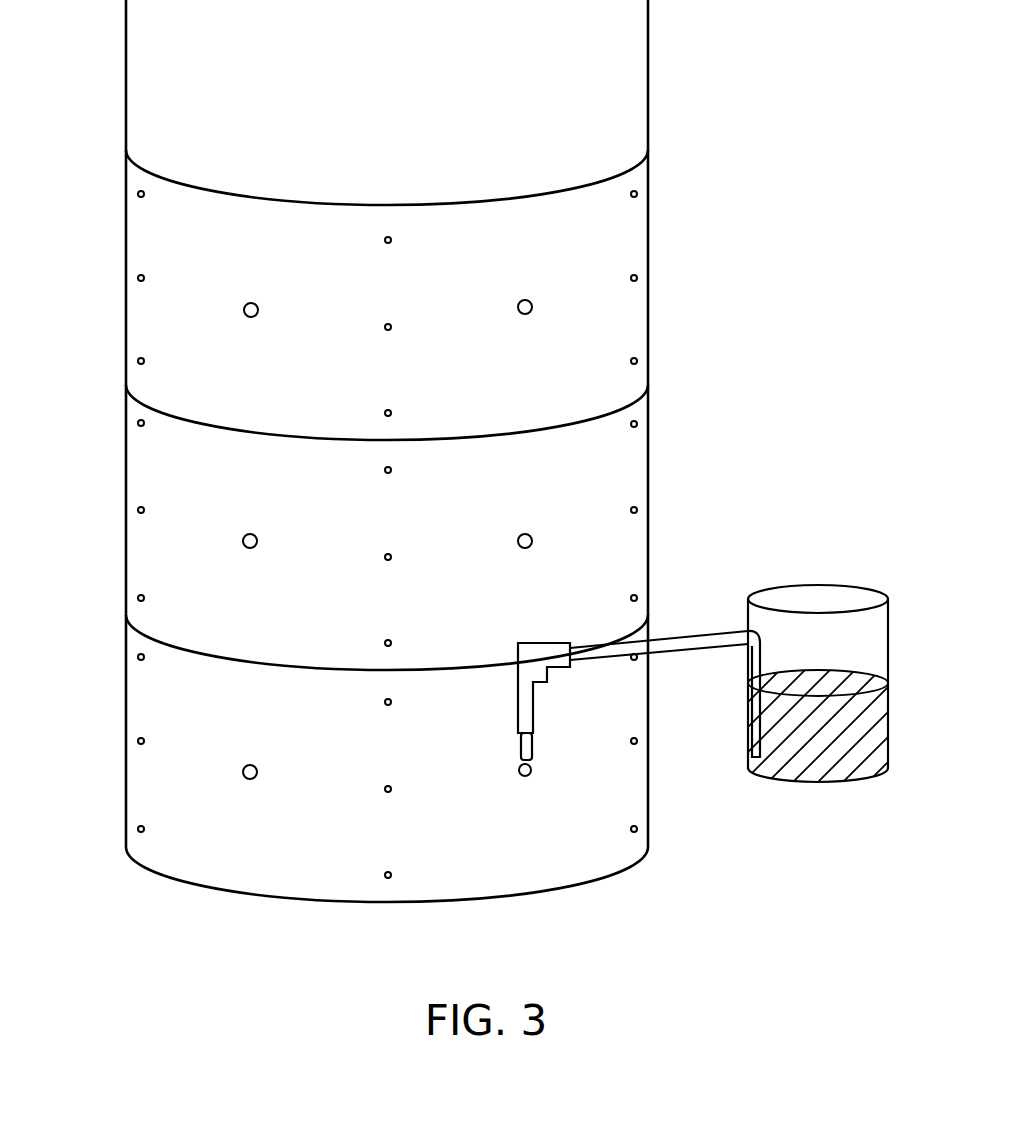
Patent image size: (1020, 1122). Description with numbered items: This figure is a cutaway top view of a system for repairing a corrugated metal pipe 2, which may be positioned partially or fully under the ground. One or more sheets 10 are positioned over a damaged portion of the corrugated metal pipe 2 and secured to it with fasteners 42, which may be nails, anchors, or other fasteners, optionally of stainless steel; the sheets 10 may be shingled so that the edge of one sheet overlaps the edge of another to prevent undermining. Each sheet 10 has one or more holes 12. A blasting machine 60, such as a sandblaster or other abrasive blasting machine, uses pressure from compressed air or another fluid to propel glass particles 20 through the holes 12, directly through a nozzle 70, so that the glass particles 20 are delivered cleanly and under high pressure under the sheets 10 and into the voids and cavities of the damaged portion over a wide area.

The corrugated metal pipe 2 is at (126, 58).
The sheet 10 is at (433, 342).
The hole 12 is at (245, 317).
The glass particles 20 is at (815, 772).
The fastener 42 is at (638, 278).
The blasting machine 60 is at (557, 650).
The nozzle 70 is at (522, 748).